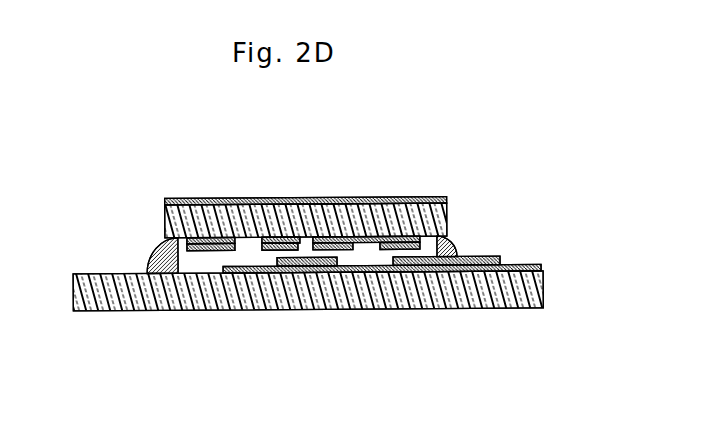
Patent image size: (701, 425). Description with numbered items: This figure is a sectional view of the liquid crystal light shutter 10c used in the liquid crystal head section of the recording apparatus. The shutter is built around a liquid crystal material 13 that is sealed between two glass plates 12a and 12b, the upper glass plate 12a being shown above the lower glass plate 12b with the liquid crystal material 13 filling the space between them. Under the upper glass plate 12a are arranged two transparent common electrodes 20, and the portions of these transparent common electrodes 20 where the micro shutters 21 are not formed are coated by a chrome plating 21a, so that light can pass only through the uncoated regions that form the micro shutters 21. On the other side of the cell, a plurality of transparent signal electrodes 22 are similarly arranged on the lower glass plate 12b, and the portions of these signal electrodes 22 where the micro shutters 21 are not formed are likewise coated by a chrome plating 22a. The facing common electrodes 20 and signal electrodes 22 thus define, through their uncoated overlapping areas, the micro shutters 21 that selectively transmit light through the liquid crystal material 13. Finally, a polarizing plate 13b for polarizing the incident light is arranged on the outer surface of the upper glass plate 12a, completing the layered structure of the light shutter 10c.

The liquid crystal light shutter 10c is at (383, 170).
The glass plate 12a is at (446, 222).
The glass plate 12b is at (142, 311).
The liquid crystal material 13 is at (213, 264).
The polarizing plate 13b is at (448, 201).
The transparent common electrode 20 is at (308, 199).
The micro shutter 21 is at (249, 247).
The chrome plating 21a is at (288, 199).
The transparent signal electrode 22 is at (543, 270).
The chrome plating 22a is at (500, 257).